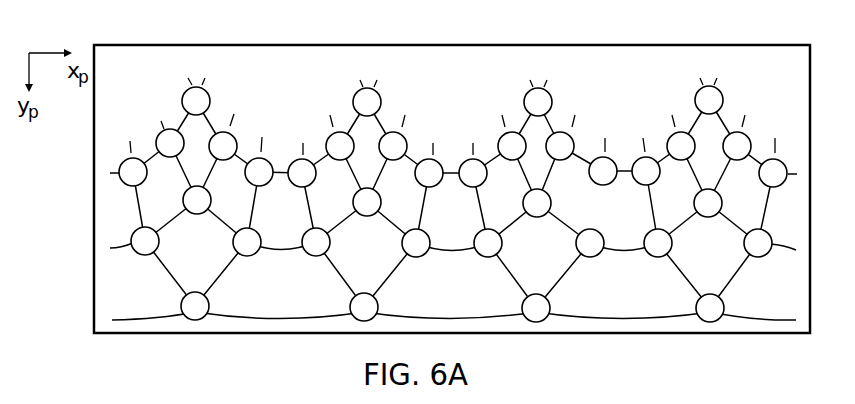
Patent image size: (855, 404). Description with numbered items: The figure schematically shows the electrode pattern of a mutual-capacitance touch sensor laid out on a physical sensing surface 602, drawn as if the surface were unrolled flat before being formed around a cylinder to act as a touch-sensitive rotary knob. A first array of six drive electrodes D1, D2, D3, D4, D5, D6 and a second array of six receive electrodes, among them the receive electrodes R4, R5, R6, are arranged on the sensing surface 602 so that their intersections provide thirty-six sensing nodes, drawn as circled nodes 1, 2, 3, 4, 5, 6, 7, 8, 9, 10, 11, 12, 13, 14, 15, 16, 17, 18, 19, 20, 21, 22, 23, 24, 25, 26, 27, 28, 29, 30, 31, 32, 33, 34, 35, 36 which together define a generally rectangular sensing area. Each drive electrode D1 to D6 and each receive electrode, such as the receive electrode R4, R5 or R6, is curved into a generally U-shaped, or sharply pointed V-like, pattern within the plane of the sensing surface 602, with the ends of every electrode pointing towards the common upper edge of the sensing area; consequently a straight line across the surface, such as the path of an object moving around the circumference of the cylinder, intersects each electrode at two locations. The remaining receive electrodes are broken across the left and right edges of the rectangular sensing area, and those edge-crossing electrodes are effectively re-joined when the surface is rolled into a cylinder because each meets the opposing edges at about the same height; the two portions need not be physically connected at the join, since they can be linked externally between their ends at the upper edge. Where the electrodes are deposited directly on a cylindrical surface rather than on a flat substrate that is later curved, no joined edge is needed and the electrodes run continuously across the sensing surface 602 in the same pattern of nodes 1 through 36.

The physical sensing surface 602 is at (468, 38).
The sensing node 1 is at (196, 101).
The sensing node 2 is at (170, 143).
The sensing node 3 is at (133, 172).
The sensing node 4 is at (773, 173).
The sensing node 5 is at (737, 146).
The sensing node 6 is at (709, 100).
The sensing node 7 is at (223, 146).
The sensing node 8 is at (197, 200).
The sensing node 9 is at (145, 241).
The sensing node 10 is at (758, 243).
The sensing node 11 is at (708, 203).
The sensing node 12 is at (681, 146).
The sensing node 13 is at (259, 172).
The sensing node 14 is at (247, 242).
The sensing node 15 is at (195, 306).
The sensing node 16 is at (710, 308).
The sensing node 17 is at (658, 243).
The sensing node 18 is at (646, 171).
The sensing node 19 is at (302, 173).
The sensing node 20 is at (316, 242).
The sensing node 21 is at (364, 307).
The sensing node 22 is at (536, 308).
The sensing node 23 is at (590, 243).
The sensing node 24 is at (603, 171).
The sensing node 25 is at (340, 146).
The sensing node 26 is at (367, 202).
The sensing node 27 is at (416, 243).
The sensing node 28 is at (488, 243).
The sensing node 29 is at (537, 203).
The sensing node 30 is at (560, 146).
The sensing node 31 is at (367, 102).
The sensing node 32 is at (393, 146).
The sensing node 33 is at (429, 173).
The sensing node 34 is at (473, 173).
The sensing node 35 is at (512, 146).
The sensing node 36 is at (538, 102).
The receive electrode R4 is at (298, 128).
The receive electrode R5 is at (325, 101).
The receive electrode R6 is at (346, 66).
The drive electrode D1 is at (375, 66).
The drive electrode D2 is at (403, 101).
The drive electrode D3 is at (433, 124).
The drive electrode D4 is at (472, 124).
The drive electrode D5 is at (500, 101).
The drive electrode D6 is at (526, 66).